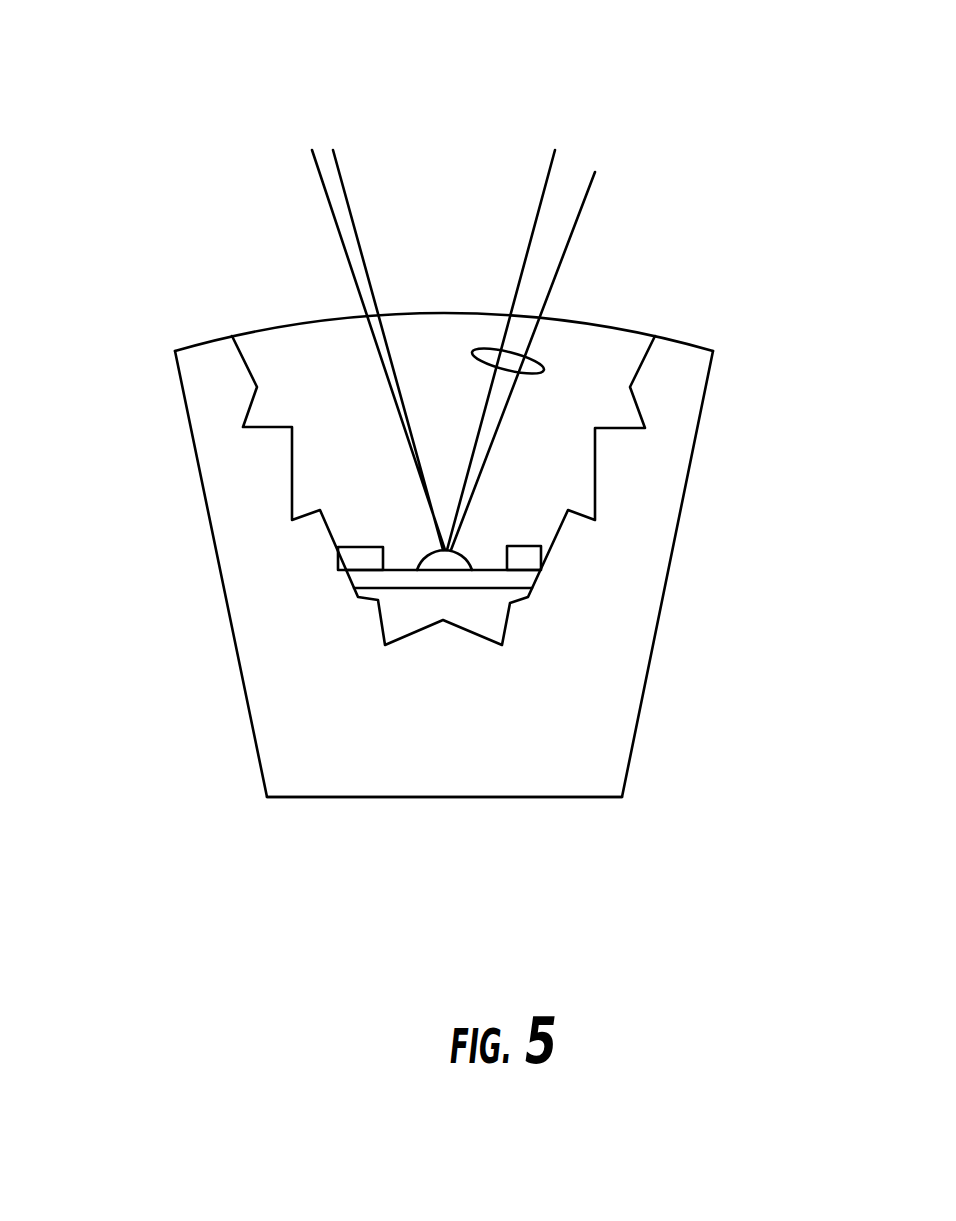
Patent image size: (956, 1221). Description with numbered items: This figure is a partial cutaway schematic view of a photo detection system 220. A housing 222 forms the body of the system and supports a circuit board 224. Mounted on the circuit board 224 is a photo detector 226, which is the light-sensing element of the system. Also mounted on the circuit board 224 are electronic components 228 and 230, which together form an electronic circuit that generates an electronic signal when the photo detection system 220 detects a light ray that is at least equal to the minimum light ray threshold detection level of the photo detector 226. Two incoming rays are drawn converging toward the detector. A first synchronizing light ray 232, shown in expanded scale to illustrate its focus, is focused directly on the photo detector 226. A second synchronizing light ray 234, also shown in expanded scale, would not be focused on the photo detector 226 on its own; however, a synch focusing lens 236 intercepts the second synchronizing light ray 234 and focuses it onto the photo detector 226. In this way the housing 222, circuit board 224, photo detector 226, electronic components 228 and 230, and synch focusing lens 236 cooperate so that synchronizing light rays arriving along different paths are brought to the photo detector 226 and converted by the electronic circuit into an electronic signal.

The photo detection system 220 is at (675, 790).
The housing 222 is at (383, 797).
The circuit board 224 is at (490, 588).
The photo detector 226 is at (460, 553).
The electronic component 228 is at (530, 545).
The electronic component 230 is at (363, 547).
The first synchronizing light ray 232 is at (330, 212).
The second synchronizing light ray 234 is at (578, 220).
The synch focusing lens 236 is at (538, 362).